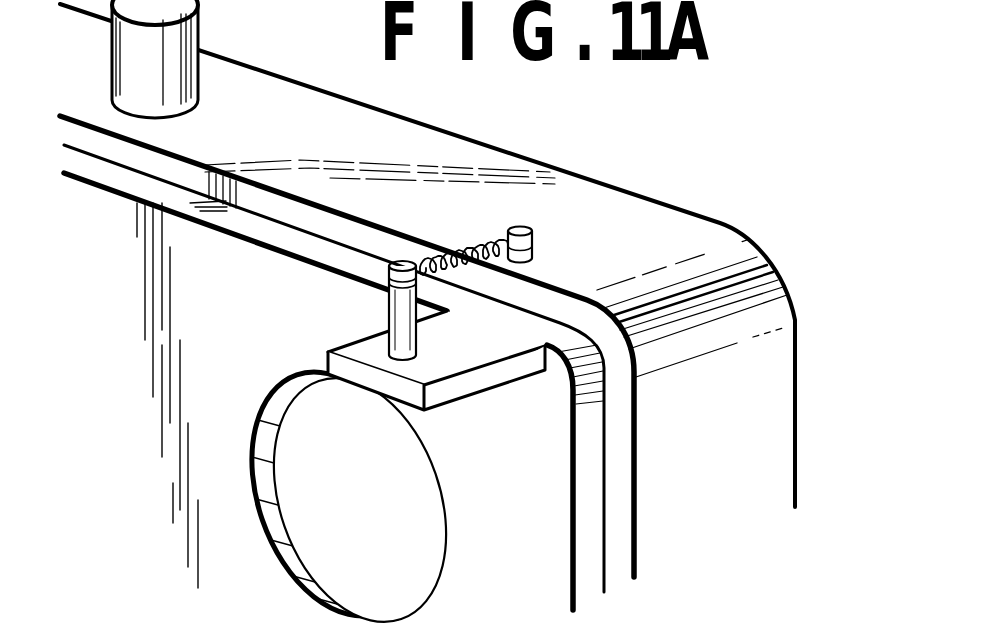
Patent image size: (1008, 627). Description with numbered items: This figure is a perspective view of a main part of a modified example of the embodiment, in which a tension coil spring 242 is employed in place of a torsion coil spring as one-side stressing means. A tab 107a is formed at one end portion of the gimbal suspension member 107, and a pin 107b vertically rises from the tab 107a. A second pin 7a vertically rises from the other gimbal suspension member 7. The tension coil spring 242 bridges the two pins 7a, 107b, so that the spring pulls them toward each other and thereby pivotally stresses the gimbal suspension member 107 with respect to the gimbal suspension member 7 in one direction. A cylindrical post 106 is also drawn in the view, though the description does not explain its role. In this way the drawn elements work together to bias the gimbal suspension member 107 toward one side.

The gimbal suspension member 7 is at (631, 212).
The pin 7a is at (523, 226).
The cylindrical shaft/post 106 is at (168, 53).
The gimbal suspension member 107 is at (471, 458).
The tab 107a is at (372, 344).
The pin 107b is at (398, 302).
The tension coil spring 242 is at (462, 252).